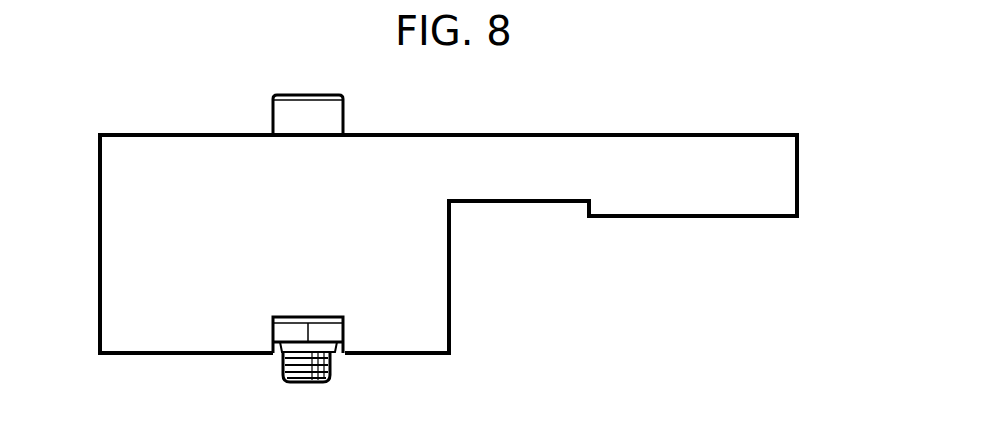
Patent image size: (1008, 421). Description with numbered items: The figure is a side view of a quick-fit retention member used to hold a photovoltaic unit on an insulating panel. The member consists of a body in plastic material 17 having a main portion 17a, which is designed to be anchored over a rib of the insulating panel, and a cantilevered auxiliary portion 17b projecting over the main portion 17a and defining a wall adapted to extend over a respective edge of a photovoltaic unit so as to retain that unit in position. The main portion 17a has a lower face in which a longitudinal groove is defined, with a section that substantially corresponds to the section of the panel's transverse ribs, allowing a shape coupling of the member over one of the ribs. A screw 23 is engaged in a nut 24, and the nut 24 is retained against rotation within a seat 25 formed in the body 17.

The body in plastic material 17 is at (117, 124).
The main portion 17a is at (428, 283).
The cantilevered auxiliary portion 17b is at (765, 178).
The screw 23 is at (285, 95).
The nut 24 is at (293, 330).
The seat 25 is at (337, 349).